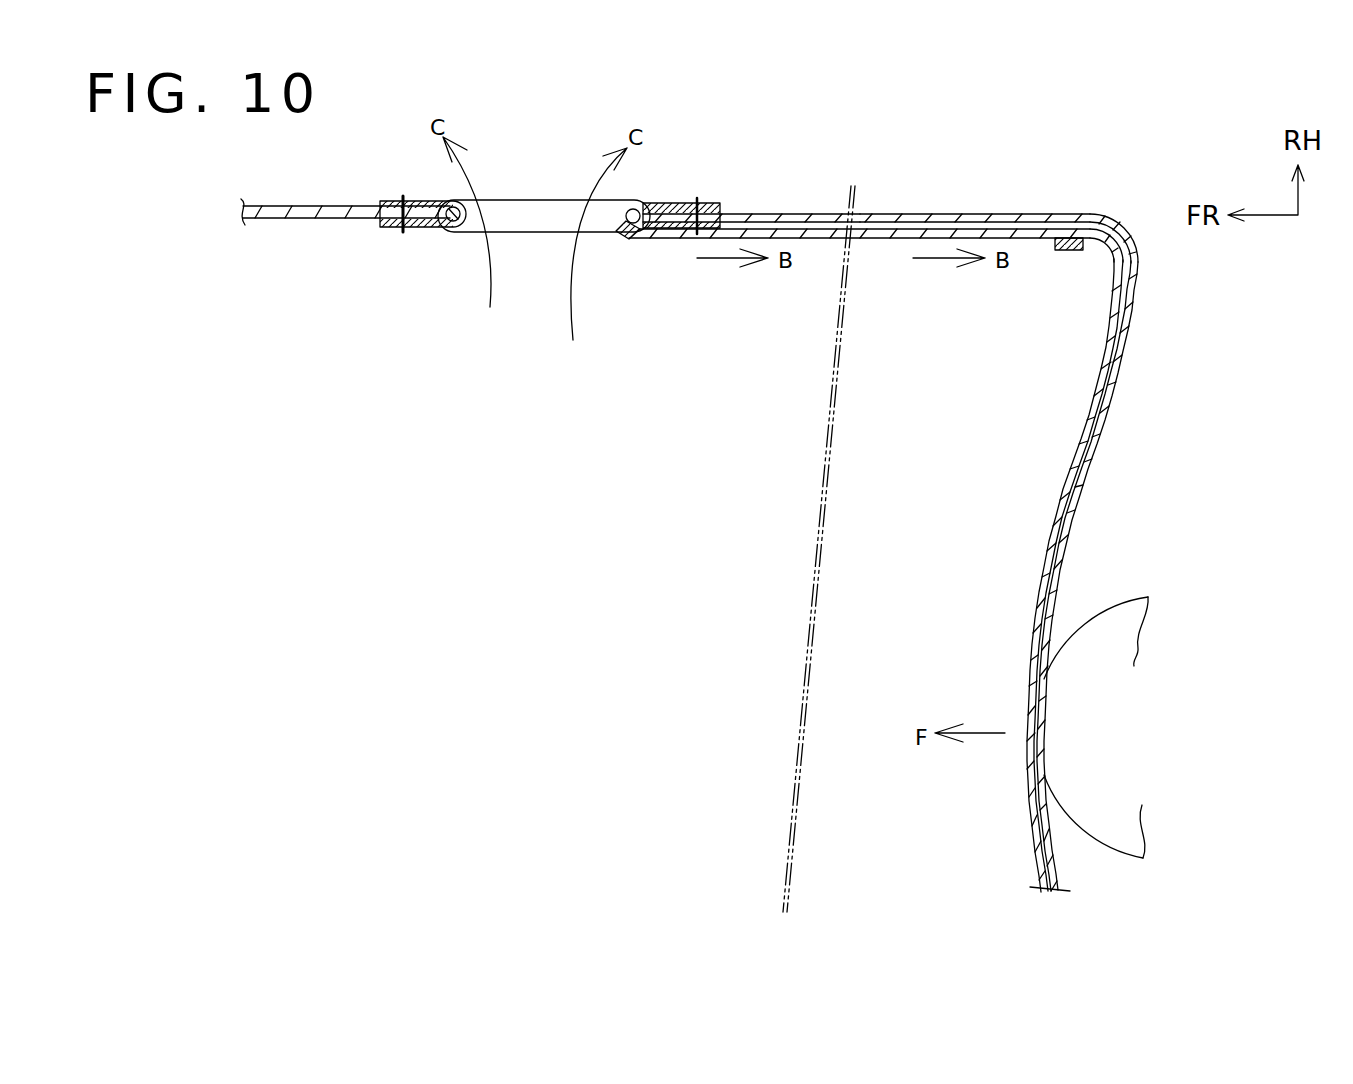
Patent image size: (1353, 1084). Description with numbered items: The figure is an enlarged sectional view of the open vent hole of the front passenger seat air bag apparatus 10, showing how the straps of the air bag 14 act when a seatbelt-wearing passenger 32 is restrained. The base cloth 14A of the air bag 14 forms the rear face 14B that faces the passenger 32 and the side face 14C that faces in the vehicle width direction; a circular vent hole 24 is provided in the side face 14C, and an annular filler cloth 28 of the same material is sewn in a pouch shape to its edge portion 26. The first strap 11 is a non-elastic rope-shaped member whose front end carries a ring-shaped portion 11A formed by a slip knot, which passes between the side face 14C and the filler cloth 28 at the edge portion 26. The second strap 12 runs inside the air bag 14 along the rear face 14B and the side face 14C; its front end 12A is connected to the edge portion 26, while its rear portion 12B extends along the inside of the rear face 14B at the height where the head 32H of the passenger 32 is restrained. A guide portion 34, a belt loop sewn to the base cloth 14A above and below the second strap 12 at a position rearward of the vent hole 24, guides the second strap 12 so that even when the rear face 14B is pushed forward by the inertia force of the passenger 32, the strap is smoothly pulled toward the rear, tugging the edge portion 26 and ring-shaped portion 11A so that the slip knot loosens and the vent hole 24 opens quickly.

The front passenger seat air bag apparatus 10 is at (1192, 351).
The first strap 11 is at (455, 238).
The ring-shaped portion 11A is at (648, 203).
The second strap 12 is at (879, 253).
The front end 12A is at (622, 239).
The rear portion 12B is at (1033, 673).
The air bag 14 is at (303, 196).
The base cloth 14A is at (924, 213).
The rear face 14B is at (1067, 535).
The side face 14C is at (817, 213).
The vent hole 24 is at (519, 198).
The edge portion 26 is at (636, 207).
The annular filler cloth 28 is at (414, 189).
The passenger 32 is at (1097, 846).
The head 32H is at (1107, 618).
The guide portion 34 is at (1064, 253).